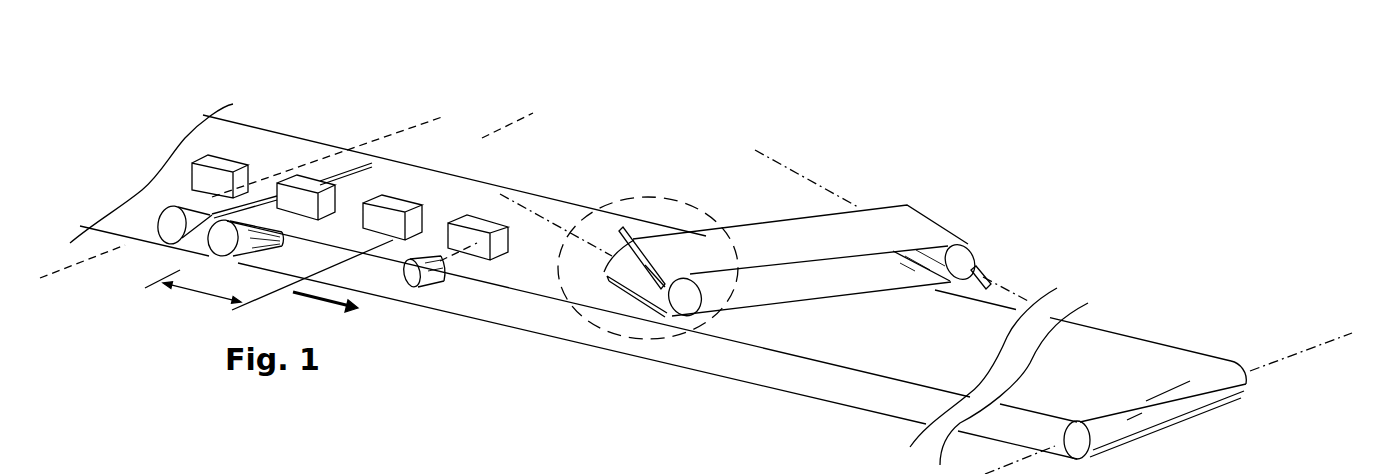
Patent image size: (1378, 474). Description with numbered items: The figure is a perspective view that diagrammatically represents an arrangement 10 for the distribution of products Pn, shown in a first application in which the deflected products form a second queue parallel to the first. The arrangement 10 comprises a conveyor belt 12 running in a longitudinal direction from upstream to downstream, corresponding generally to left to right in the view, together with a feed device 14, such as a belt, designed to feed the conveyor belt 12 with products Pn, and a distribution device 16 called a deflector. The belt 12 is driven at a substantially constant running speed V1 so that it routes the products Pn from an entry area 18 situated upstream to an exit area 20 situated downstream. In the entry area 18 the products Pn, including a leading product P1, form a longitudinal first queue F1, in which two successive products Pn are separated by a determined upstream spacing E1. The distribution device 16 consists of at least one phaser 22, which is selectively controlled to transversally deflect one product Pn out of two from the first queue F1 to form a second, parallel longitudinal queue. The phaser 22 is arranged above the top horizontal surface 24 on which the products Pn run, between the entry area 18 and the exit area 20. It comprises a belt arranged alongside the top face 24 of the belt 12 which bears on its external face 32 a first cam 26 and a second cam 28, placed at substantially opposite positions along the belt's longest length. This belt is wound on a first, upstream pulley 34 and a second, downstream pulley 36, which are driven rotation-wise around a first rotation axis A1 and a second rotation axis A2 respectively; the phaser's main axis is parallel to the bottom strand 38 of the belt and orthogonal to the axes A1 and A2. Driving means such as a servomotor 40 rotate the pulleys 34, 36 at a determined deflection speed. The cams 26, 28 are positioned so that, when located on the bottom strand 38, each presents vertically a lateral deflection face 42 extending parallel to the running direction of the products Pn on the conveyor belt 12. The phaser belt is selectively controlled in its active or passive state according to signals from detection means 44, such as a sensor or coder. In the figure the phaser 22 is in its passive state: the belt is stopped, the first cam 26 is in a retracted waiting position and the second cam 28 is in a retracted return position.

The arrangement 10 is at (889, 153).
The conveyor belt 12 is at (510, 318).
The feed device 14 is at (246, 146).
The distribution device 16 is at (726, 159).
The entry area 18 is at (192, 256).
The exit area 20 is at (1220, 331).
The phaser 22 is at (746, 217).
The top horizontal surface 24 is at (475, 192).
The first cam 26 is at (665, 283).
The second cam 28 is at (983, 275).
The external face 32 is at (790, 238).
The first pulley 34 is at (683, 303).
The second pulley 36 is at (957, 271).
The bottom strand 38 is at (800, 283).
The servomotor 40 is at (658, 214).
The lateral deflection face 42 is at (600, 270).
The detection means 44 is at (412, 275).
The first rotation axis A1 is at (817, 370).
The second rotation axis A2 is at (770, 158).
The upstream spacing E1 is at (202, 302).
The first queue F1 is at (328, 163).
The first product P1 is at (487, 224).
The products Pn is at (332, 198).
The running speed V1 is at (325, 309).